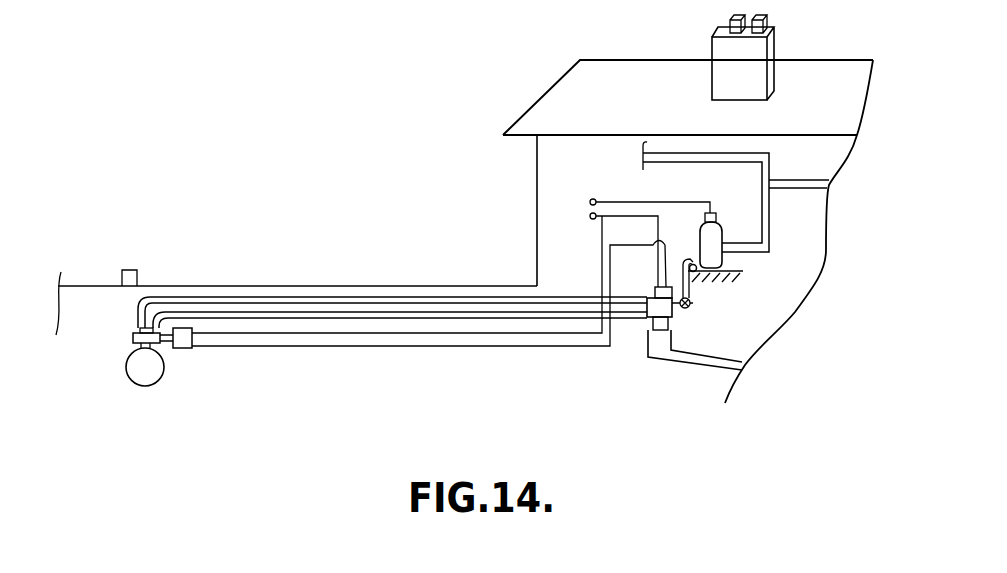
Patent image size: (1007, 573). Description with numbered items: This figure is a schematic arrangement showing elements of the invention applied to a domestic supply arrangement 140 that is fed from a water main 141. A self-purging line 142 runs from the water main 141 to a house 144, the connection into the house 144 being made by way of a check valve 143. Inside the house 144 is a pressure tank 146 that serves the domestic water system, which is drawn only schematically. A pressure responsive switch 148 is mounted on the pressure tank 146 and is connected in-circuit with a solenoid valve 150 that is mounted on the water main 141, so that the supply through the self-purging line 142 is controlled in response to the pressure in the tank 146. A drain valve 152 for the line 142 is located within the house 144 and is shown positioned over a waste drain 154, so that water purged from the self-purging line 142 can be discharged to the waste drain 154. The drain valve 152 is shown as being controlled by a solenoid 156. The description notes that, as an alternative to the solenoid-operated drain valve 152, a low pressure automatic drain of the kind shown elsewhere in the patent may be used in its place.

The domestic supply arrangement 140 is at (225, 222).
The water main 141 is at (163, 368).
The self-purging line 142 is at (369, 287).
The check valve 143 is at (693, 303).
The house 144 is at (537, 175).
The pressure tank 146 is at (800, 230).
The pressure responsive switch 148 is at (735, 192).
The solenoid valve 150 is at (133, 336).
The drain valve 152 is at (647, 318).
The waste drain 154 is at (672, 343).
The solenoid 156 is at (657, 288).